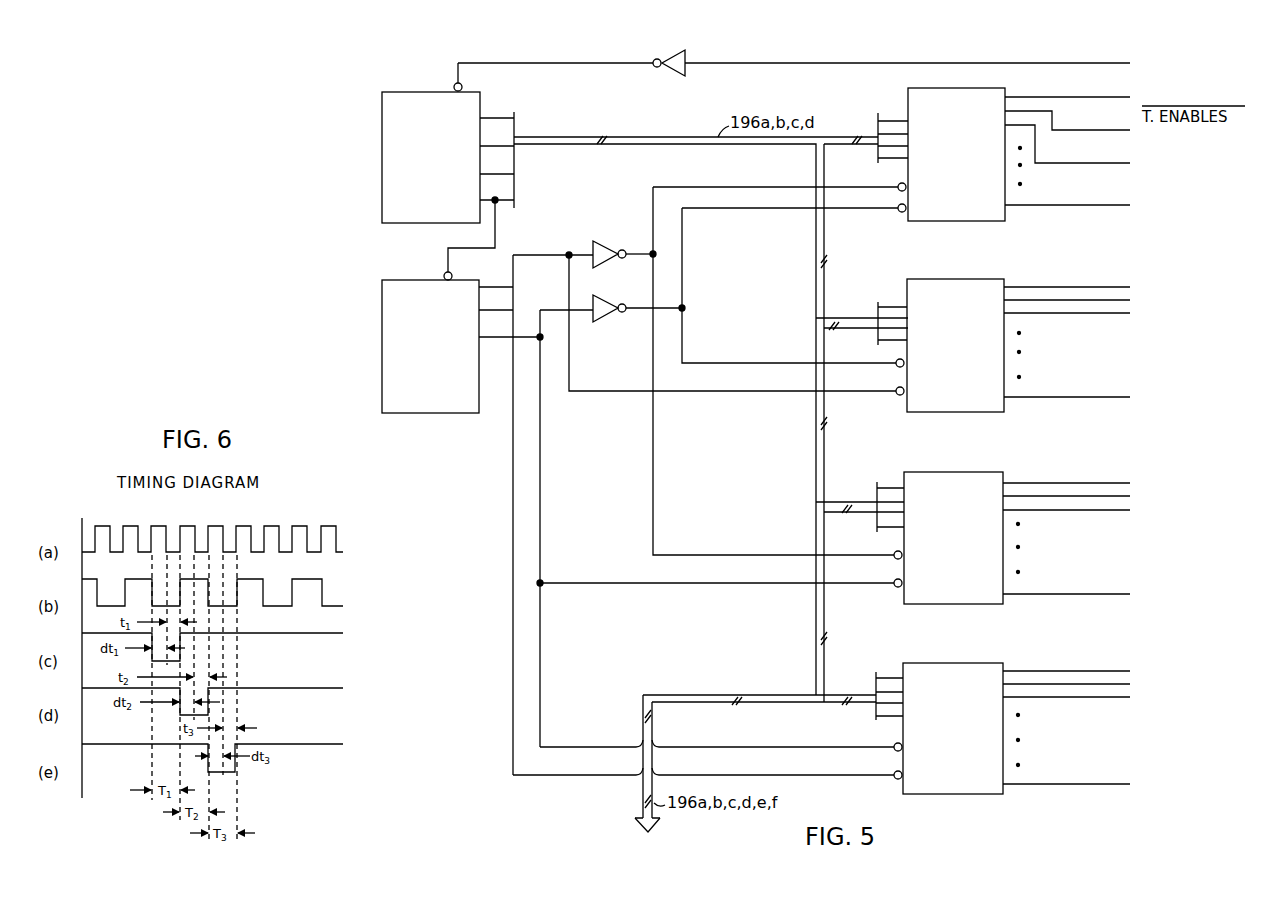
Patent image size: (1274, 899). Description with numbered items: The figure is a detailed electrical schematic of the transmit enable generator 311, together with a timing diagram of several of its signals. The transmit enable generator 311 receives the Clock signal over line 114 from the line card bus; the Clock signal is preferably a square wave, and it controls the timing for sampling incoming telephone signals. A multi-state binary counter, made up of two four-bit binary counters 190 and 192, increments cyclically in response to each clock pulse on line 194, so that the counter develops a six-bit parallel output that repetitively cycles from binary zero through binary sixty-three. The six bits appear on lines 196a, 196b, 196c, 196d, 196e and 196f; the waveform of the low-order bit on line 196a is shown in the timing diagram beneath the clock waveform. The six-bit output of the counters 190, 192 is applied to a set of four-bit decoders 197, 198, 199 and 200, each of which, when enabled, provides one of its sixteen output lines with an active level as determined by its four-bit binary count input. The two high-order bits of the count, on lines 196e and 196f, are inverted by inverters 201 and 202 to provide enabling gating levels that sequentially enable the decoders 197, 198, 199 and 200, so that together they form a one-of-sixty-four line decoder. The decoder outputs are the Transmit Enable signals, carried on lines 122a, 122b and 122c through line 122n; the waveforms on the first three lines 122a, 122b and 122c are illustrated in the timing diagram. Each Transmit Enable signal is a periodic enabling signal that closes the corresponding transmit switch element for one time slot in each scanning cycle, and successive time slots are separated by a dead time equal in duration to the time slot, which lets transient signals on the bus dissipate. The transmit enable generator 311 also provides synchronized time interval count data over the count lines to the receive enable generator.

In FIG. 5, the clock signal line 114 is at (1025, 63).
In FIG. 6, the clock signal line 114 is at (247, 544).
In FIG. 5, the clock pulse line 194 is at (552, 63).
In FIG. 5, the four-bit binary counter 190 is at (443, 226).
In FIG. 5, the four-bit binary counter 192 is at (445, 416).
In FIG. 5, the low-order bit output line 196a is at (505, 118).
In FIG. 6, the low-order bit output line 196a is at (252, 597).
In FIG. 5, the counter output line 196b is at (503, 146).
In FIG. 5, the counter output line 196c is at (505, 174).
In FIG. 5, the counter output line 196d is at (508, 200).
In FIG. 5, the high-order bit output line 196e is at (513, 287).
In FIG. 5, the high-order bit output line 196f is at (517, 337).
In FIG. 5, the inverter 201 is at (603, 244).
In FIG. 5, the inverter 202 is at (603, 318).
In FIG. 5, the four-bit decoder 197 is at (948, 222).
In FIG. 5, the four-bit decoder 198 is at (948, 413).
In FIG. 5, the four-bit decoder 199 is at (948, 605).
In FIG. 5, the four-bit decoder 200 is at (960, 795).
In FIG. 5, the transmit enable line 122a is at (1116, 97).
In FIG. 6, the transmit enable line 122a is at (252, 652).
In FIG. 5, the transmit enable line 122b is at (1116, 130).
In FIG. 6, the transmit enable line 122b is at (252, 706).
In FIG. 5, the transmit enable line 122c is at (1116, 163).
In FIG. 6, the transmit enable line 122c is at (252, 763).
In FIG. 5, the transmit enable line 122n is at (1050, 784).
In FIG. 5, the transmit enable generator 311 is at (490, 464).